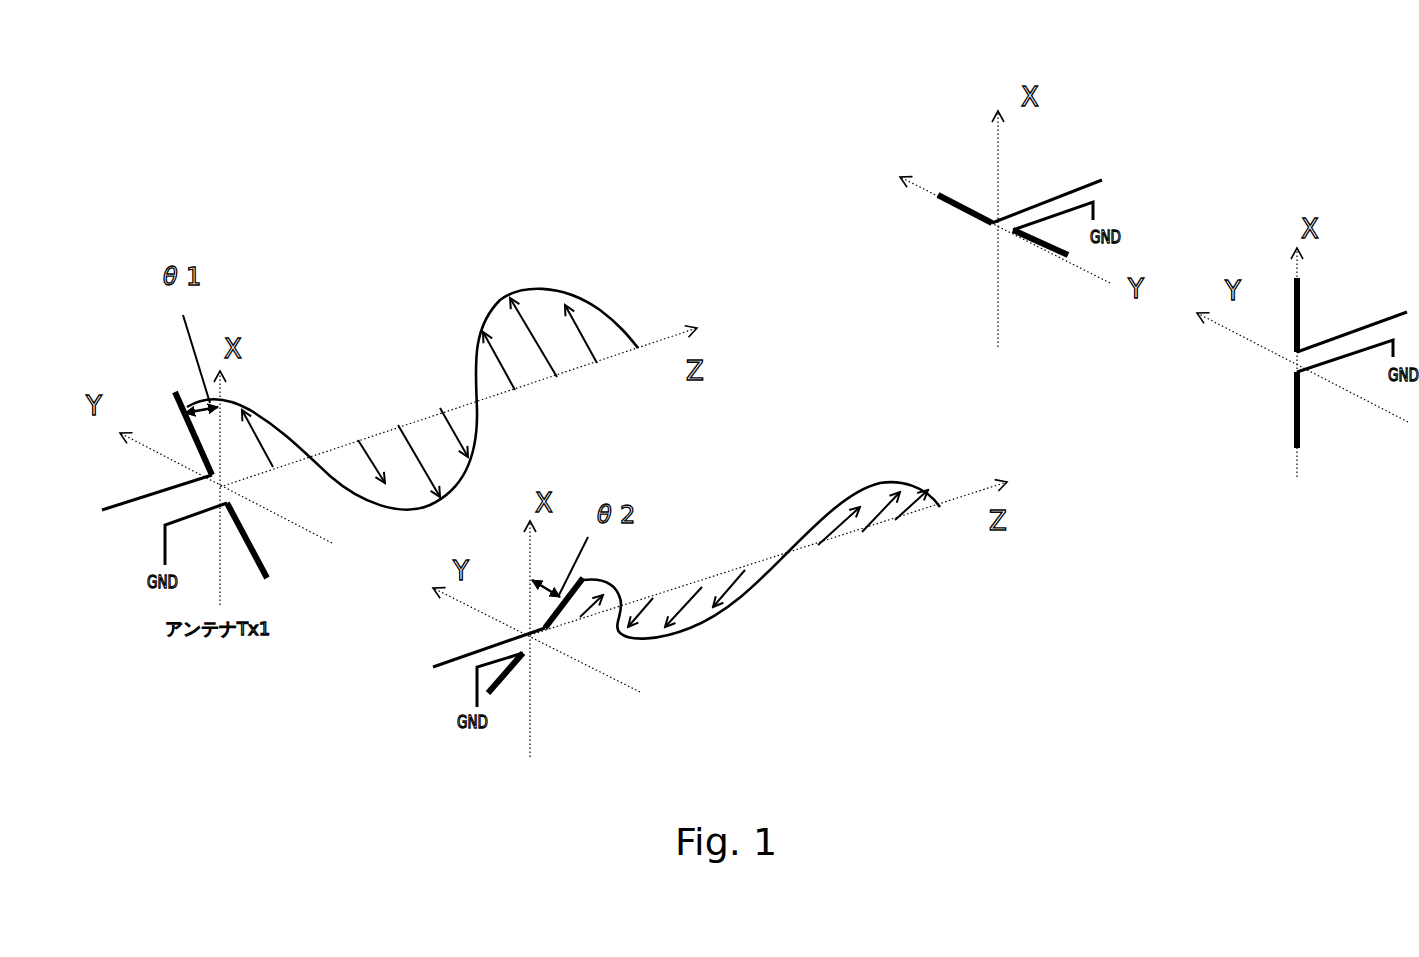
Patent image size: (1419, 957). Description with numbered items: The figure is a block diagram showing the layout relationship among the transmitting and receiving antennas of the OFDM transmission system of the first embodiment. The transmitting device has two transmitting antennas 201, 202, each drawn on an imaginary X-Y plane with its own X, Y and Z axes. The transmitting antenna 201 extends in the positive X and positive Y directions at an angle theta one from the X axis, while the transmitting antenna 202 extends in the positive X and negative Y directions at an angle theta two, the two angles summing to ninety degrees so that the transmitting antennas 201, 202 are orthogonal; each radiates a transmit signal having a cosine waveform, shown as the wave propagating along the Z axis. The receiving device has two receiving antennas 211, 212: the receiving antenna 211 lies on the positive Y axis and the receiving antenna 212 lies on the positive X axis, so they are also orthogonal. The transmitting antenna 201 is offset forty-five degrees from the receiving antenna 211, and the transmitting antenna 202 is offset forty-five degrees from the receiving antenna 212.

The transmitting antenna 201 is at (172, 392).
The transmitting antenna 202 is at (583, 582).
The receiving antenna 211 is at (970, 210).
The receiving antenna 212 is at (1302, 308).